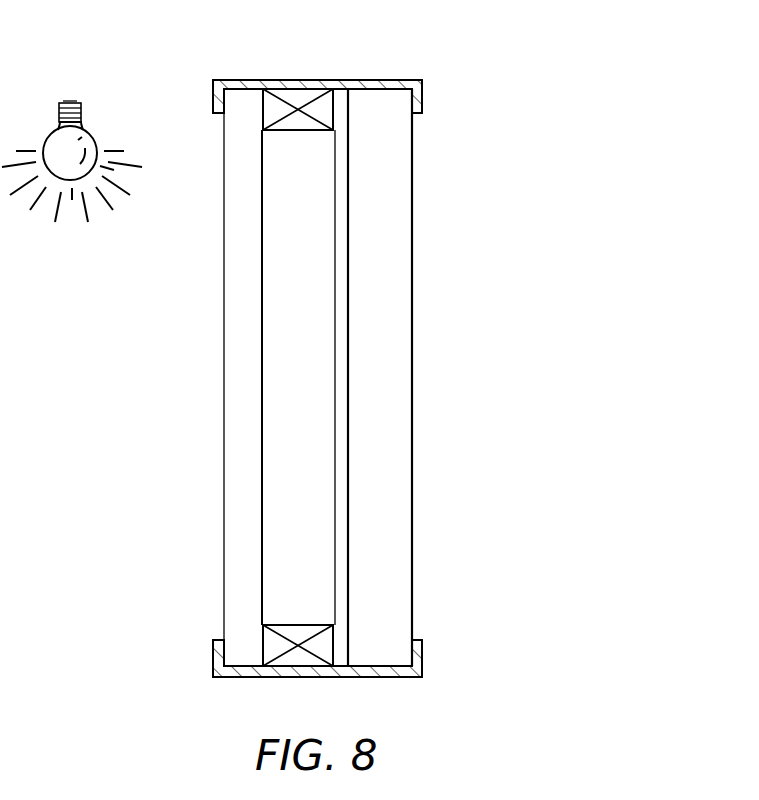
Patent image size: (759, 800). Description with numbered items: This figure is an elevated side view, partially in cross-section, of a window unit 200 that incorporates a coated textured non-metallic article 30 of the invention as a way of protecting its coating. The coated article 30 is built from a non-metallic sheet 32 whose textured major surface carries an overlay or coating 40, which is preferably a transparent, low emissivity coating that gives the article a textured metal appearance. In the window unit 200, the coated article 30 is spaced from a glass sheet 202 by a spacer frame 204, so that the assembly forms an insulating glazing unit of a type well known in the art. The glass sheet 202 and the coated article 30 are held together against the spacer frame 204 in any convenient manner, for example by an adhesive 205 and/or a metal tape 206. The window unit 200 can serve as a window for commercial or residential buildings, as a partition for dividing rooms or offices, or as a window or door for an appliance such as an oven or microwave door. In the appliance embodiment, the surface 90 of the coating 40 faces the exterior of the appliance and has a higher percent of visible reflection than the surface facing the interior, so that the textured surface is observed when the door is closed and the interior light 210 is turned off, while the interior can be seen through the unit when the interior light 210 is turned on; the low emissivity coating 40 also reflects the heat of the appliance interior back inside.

The window unit 200 is at (470, 181).
The glass sheet 202 is at (224, 372).
The spacer frame 204 is at (300, 132).
The adhesive 205 is at (262, 110).
The metal tape 206 is at (422, 95).
The interior light 210 is at (87, 133).
The surface of the coating 90 is at (335, 338).
The coating 40 is at (335, 420).
The coated textured non-metallic article 30 is at (470, 478).
The non-metallic sheet 32 is at (398, 550).